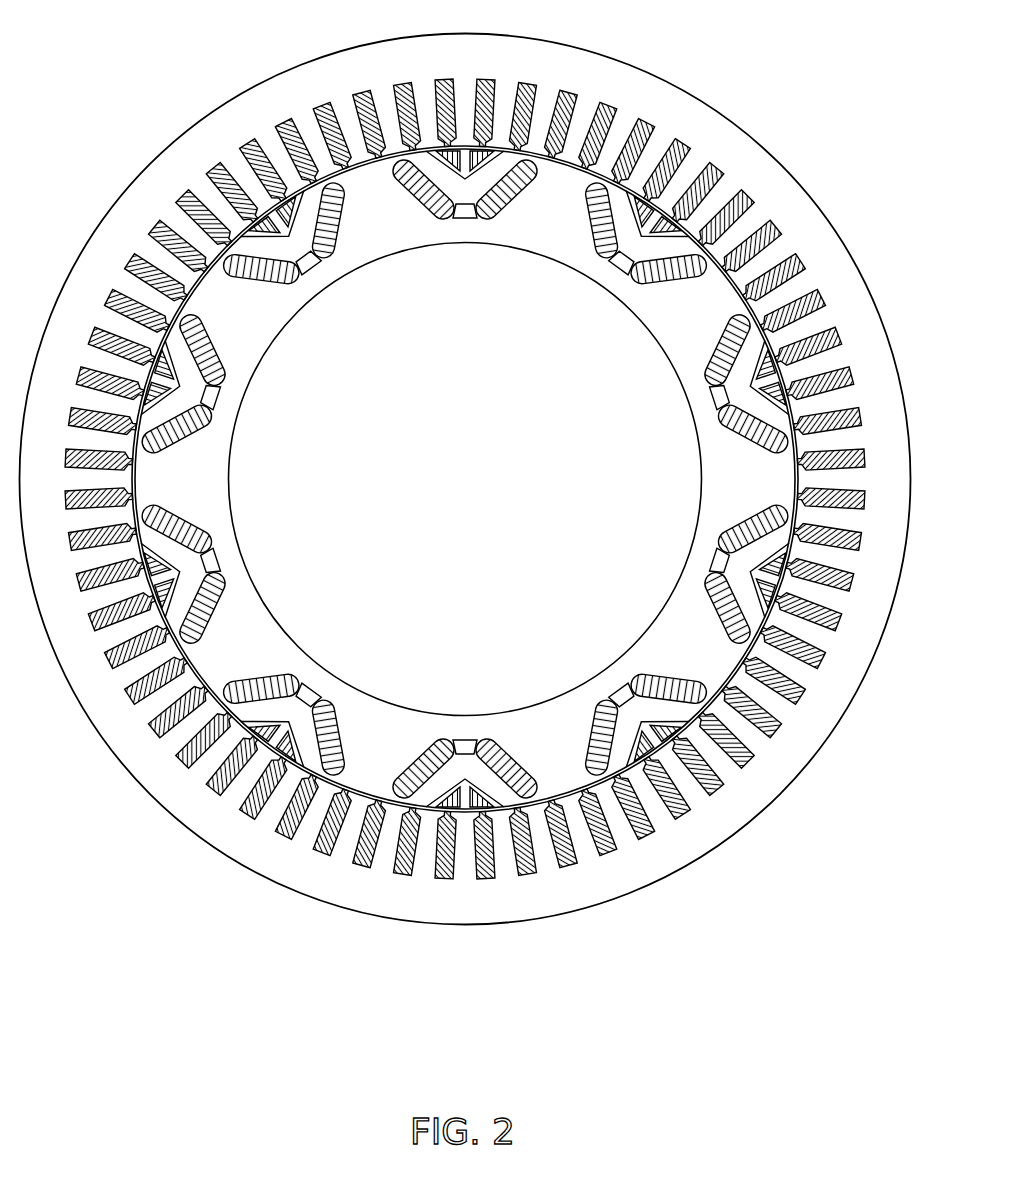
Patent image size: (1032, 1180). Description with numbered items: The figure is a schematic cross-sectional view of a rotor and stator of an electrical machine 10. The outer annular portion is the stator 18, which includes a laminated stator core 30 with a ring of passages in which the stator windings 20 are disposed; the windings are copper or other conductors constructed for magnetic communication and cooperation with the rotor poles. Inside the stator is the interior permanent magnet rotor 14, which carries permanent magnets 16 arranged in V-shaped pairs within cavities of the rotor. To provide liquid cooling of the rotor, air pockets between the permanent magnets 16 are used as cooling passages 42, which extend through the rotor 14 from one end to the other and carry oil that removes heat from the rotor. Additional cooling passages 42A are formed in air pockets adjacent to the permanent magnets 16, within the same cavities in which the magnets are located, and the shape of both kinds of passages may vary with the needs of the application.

The electrical machine 10 is at (477, 469).
The rotor 14 is at (465, 431).
The permanent magnets 16 is at (522, 200).
The stator 18 is at (477, 469).
The stator windings 20 is at (563, 100).
The laminated stator core 30 is at (777, 152).
The cooling passages 42 is at (470, 219).
The cooling passages 42A is at (438, 148).